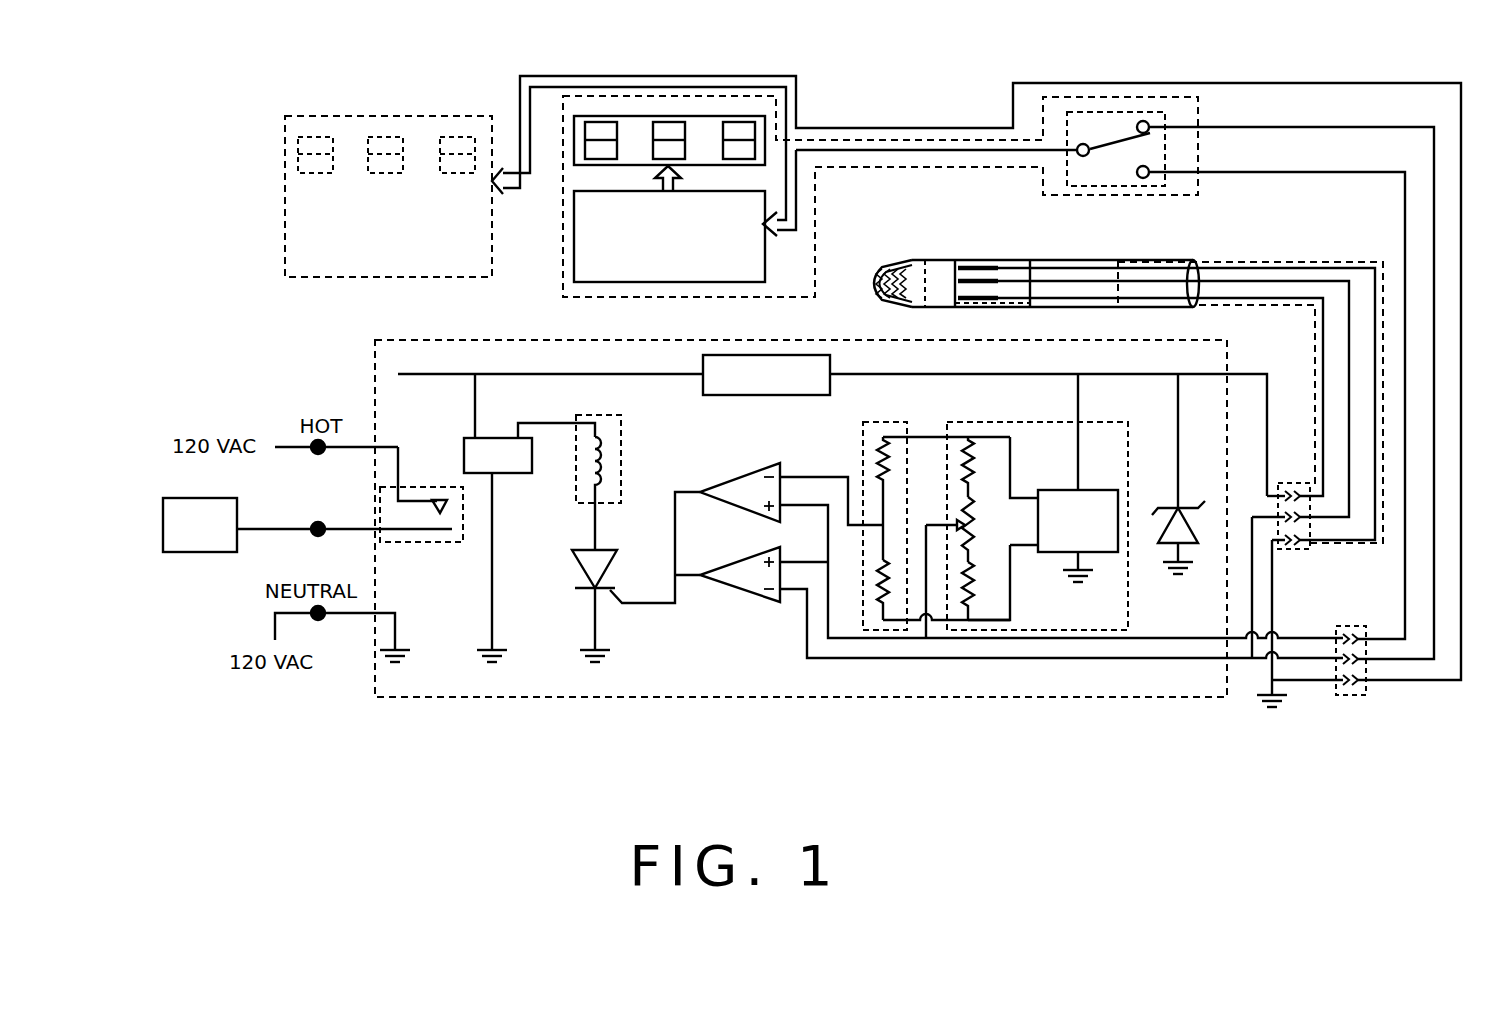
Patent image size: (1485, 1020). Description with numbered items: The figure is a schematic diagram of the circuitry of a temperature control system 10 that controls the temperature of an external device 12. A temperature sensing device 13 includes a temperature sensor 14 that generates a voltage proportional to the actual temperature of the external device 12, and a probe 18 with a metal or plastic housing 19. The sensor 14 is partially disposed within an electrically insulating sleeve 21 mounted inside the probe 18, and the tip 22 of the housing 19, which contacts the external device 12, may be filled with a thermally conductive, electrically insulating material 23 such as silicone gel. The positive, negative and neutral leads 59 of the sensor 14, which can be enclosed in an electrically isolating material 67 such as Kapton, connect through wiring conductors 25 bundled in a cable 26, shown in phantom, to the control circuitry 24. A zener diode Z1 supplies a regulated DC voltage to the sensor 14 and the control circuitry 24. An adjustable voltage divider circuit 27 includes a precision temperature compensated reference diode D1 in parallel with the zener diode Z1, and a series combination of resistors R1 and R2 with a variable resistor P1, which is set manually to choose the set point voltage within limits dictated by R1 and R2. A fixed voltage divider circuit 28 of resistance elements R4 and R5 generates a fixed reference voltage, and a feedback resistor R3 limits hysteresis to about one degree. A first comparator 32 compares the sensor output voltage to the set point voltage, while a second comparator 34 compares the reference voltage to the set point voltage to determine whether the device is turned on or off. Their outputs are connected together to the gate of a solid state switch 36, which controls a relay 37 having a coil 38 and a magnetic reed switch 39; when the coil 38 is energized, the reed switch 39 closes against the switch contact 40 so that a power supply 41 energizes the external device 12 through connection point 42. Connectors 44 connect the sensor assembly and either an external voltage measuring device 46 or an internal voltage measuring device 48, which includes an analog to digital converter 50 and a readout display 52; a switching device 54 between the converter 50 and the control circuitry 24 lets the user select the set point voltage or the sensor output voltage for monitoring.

The temperature control system 10 is at (345, 306).
The external device 12 is at (198, 496).
The temperature sensing device 13 is at (1000, 286).
The temperature sensor 14 is at (941, 278).
The probe 18 is at (1064, 255).
The housing 19 is at (1181, 260).
The electrically insulating sleeve 21 is at (992, 256).
The tip 22 is at (889, 259).
The thermally conductive, electrically insulating material 23 is at (864, 290).
The control circuitry 24 is at (931, 700).
The wiring conductors 25 is at (1264, 283).
The cable 26 is at (1341, 260).
The adjustable voltage divider circuit 27 is at (1027, 506).
The fixed voltage divider circuit 28 is at (936, 508).
The first comparator 32 is at (728, 598).
The second comparator 34 is at (729, 485).
The solid state switch 36 is at (611, 578).
The relay 37 is at (573, 488).
The coil 38 is at (601, 468).
The magnetic reed switch 39 is at (423, 499).
The switch contact 40 is at (418, 531).
The power supply 41 is at (485, 468).
The connection point 42 is at (318, 521).
The connectors 44 is at (1301, 554).
The external voltage measuring device 46 is at (378, 116).
The internal voltage measuring device 48 is at (919, 138).
The analog to digital converter 50 is at (647, 251).
The readout display 52 is at (645, 116).
The switching device 54 is at (1117, 112).
The leads 59 is at (995, 271).
The electrically isolating material 67 is at (1031, 286).
The feedback resistor R3 is at (752, 395).
The resistance element R4 is at (898, 498).
The resistance element R5 is at (898, 590).
The temperature compatible resistor R1 is at (984, 467).
The temperature compatible resistor R2 is at (984, 591).
The variable resistor P1 is at (965, 567).
The reference diode D1 is at (1066, 534).
The zener diode Z1 is at (1169, 500).